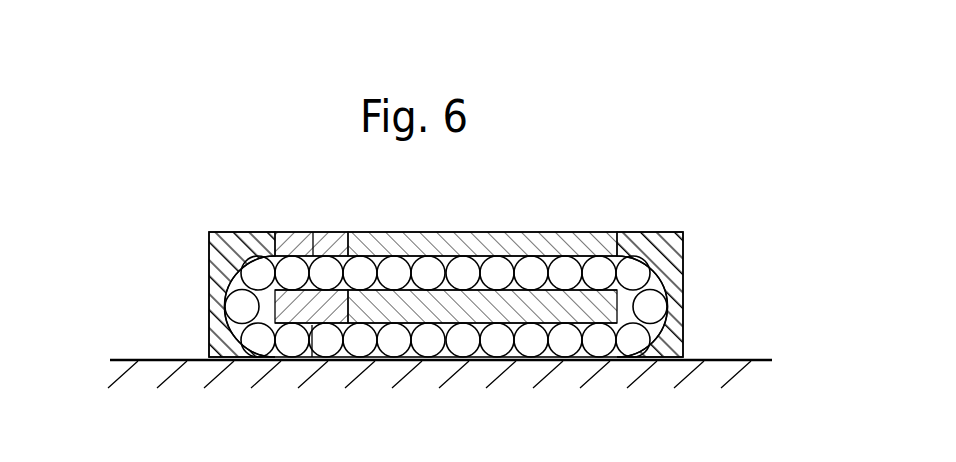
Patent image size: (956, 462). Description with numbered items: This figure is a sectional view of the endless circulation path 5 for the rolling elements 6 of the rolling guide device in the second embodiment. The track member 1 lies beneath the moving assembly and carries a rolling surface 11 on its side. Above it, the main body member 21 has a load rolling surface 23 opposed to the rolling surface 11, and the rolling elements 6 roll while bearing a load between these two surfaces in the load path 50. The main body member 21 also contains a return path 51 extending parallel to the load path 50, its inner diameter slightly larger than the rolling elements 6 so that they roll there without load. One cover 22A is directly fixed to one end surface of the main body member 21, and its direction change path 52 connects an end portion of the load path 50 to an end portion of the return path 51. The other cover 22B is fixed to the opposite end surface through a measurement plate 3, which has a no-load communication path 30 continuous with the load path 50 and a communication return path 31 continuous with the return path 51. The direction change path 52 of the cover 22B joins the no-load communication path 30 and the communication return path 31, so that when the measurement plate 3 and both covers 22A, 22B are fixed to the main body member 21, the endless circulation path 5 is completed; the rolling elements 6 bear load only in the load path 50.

The track member 1 is at (124, 353).
The rolling surface 11 is at (177, 360).
The main body member 21 is at (447, 232).
The cover 22A is at (684, 316).
The cover 22B is at (207, 316).
The load rolling surface 23 is at (481, 325).
The measurement plate 3 is at (313, 232).
The communication return path 31 is at (298, 264).
The endless circulation path 5 is at (546, 249).
The return path 51 is at (488, 260).
The direction change path 52 is at (233, 277).
The no-load communication path 30 is at (312, 325).
The load path 50 is at (415, 366).
The rolling element 6 is at (562, 345).